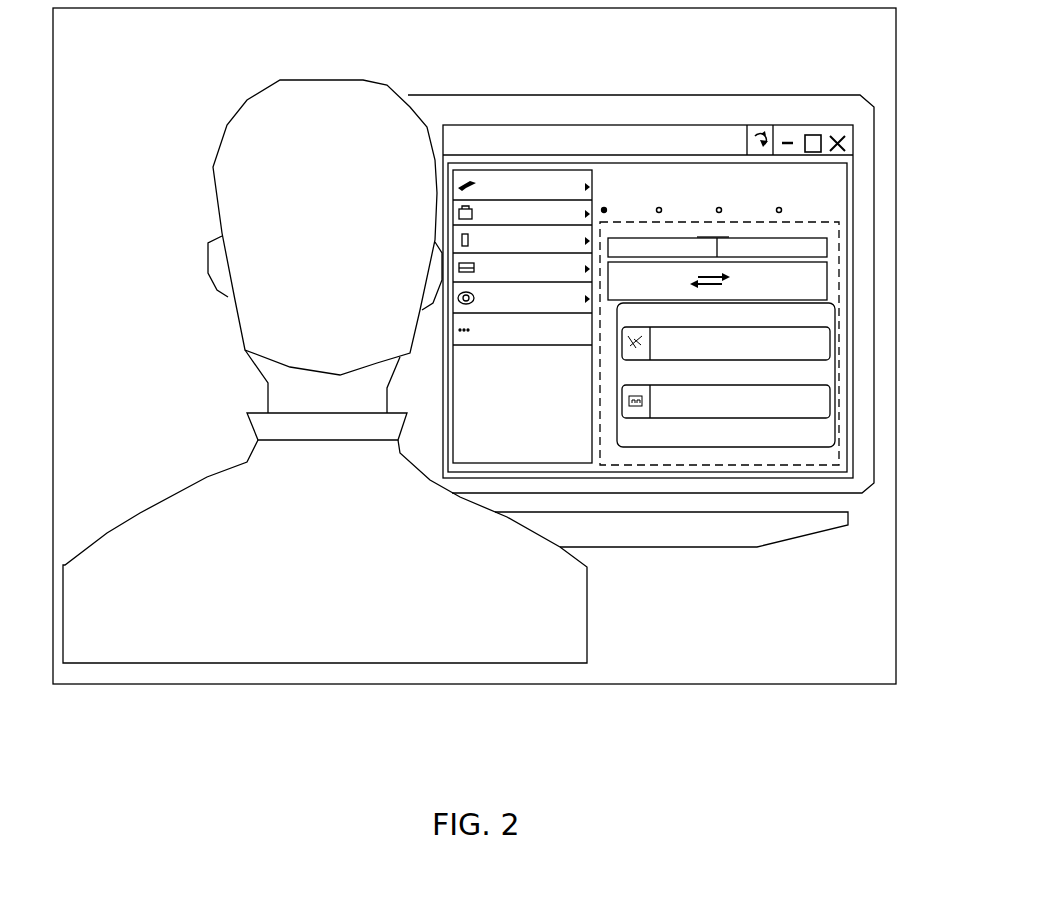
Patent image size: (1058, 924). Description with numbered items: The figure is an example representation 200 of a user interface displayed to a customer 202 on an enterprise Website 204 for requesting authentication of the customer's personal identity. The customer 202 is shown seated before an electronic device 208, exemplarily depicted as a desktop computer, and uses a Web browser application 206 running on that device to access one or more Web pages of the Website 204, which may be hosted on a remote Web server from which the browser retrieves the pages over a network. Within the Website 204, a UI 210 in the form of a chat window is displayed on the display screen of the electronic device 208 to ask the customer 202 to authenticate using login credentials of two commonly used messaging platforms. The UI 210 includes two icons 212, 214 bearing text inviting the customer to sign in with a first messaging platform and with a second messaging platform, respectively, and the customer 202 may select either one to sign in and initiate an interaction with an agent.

The example representation 200 is at (876, 717).
The customer 202 is at (324, 73).
The enterprise Website 204 is at (533, 414).
The Web browser application 206 is at (545, 127).
The electronic device 208 is at (710, 95).
The UI 210 is at (832, 301).
The icon 212 is at (833, 342).
The icon 214 is at (833, 402).